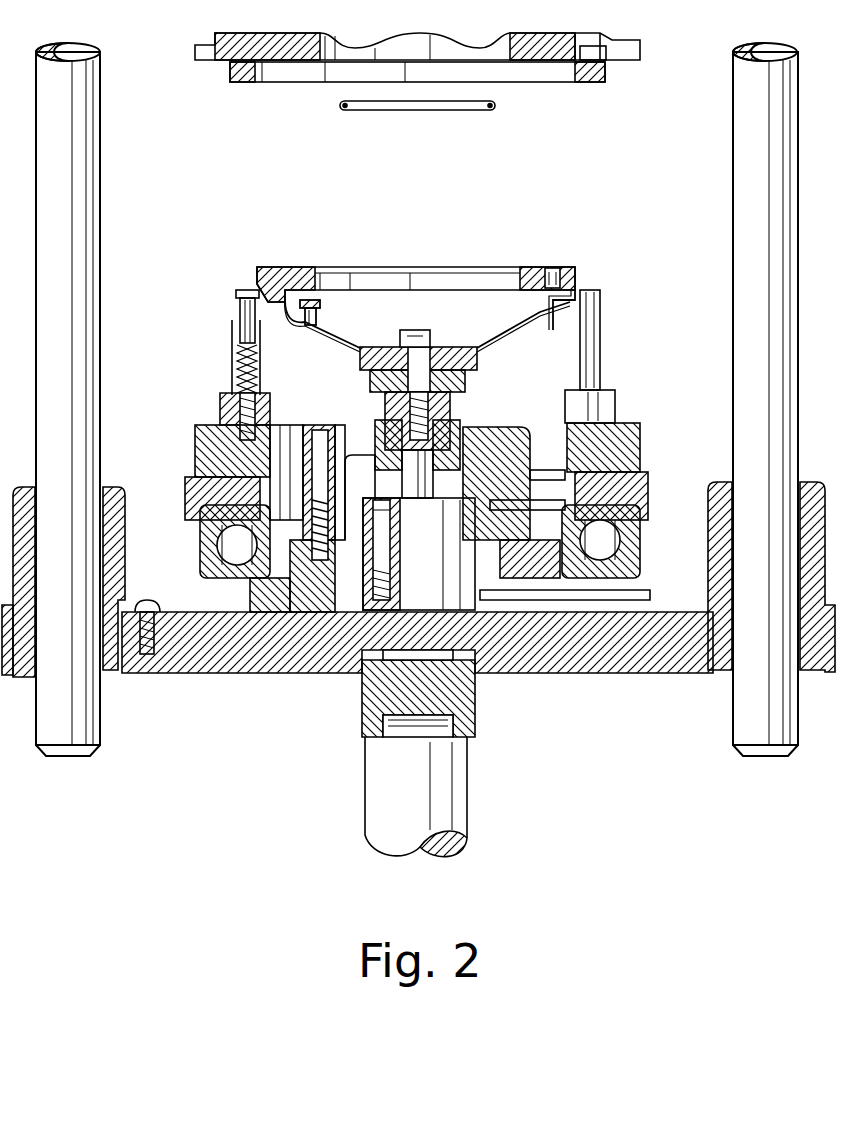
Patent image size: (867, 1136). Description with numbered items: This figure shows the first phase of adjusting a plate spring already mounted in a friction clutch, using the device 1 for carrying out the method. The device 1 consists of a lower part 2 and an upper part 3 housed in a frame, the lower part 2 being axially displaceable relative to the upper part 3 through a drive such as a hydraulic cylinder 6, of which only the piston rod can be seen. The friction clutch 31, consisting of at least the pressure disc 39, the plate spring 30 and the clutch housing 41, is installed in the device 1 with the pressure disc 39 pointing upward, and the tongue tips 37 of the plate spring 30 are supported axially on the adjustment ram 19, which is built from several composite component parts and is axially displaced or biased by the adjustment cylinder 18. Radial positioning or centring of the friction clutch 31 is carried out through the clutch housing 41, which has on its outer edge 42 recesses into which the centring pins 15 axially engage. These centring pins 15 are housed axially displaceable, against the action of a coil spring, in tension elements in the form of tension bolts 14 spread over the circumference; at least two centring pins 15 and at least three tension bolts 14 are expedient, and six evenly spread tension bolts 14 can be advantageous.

The device 1 is at (232, 226).
The lower part 2 is at (258, 682).
The upper part 3 is at (640, 50).
The hydraulic cylinder 6 is at (400, 802).
The tension bolts 14 is at (222, 402).
The centring pins 15 is at (238, 306).
The adjustment cylinder 18 is at (440, 564).
The adjustment ram 19 is at (470, 373).
The plate spring 30 is at (478, 338).
The friction clutch 31 is at (586, 287).
The tongue tips 37 is at (360, 356).
The pressure disc 39 is at (576, 270).
The clutch housing 41 is at (557, 332).
The outer edge 42 is at (600, 292).